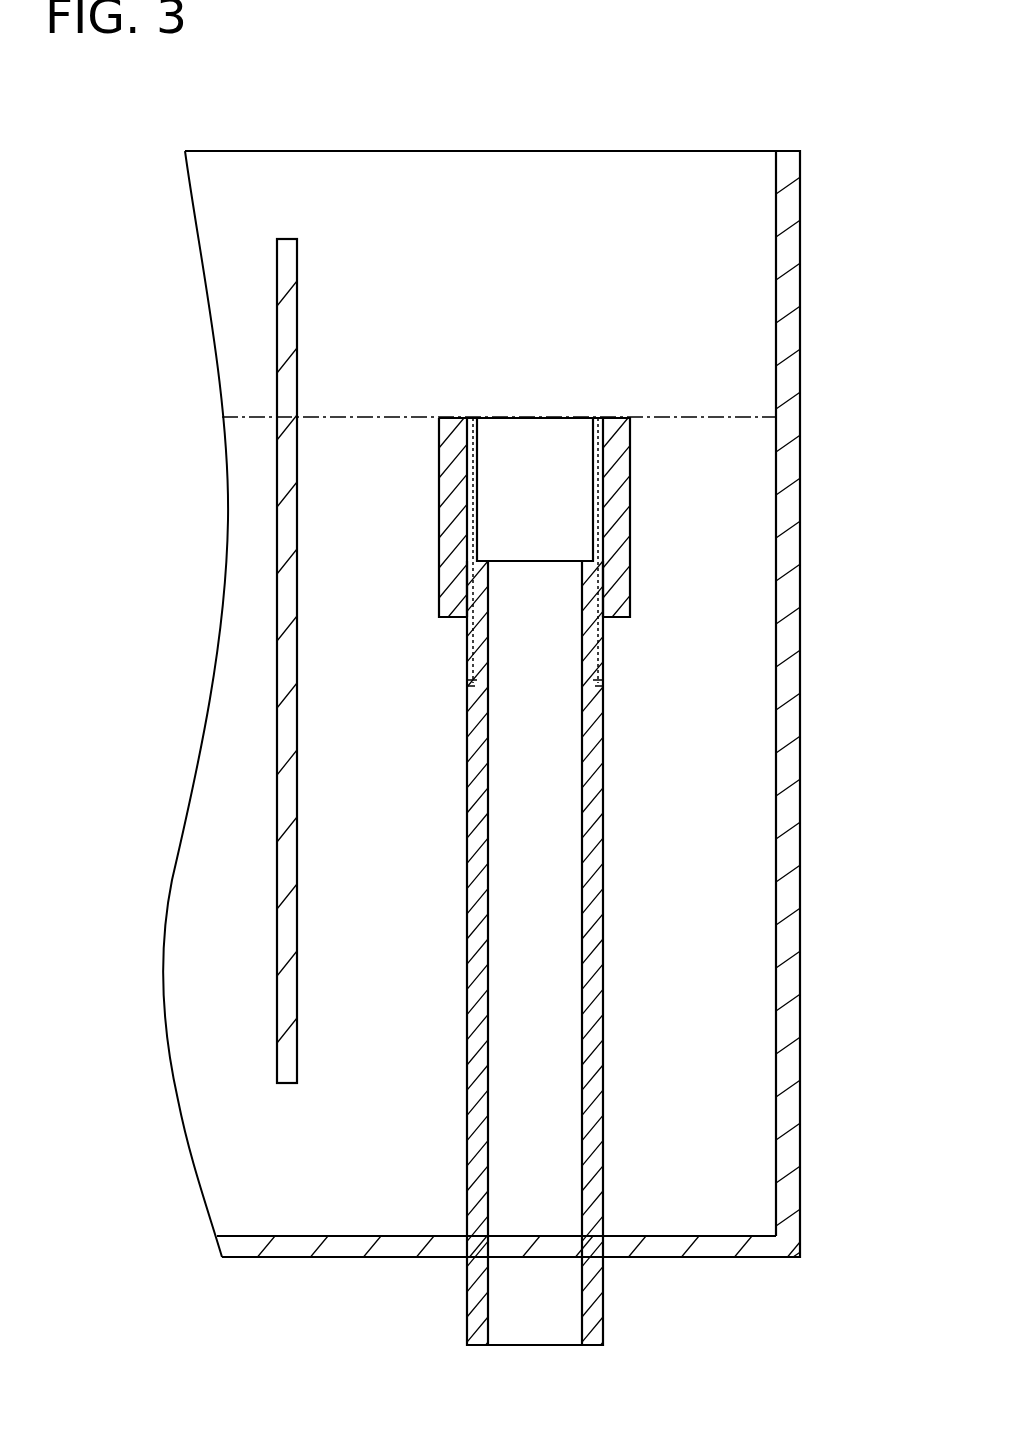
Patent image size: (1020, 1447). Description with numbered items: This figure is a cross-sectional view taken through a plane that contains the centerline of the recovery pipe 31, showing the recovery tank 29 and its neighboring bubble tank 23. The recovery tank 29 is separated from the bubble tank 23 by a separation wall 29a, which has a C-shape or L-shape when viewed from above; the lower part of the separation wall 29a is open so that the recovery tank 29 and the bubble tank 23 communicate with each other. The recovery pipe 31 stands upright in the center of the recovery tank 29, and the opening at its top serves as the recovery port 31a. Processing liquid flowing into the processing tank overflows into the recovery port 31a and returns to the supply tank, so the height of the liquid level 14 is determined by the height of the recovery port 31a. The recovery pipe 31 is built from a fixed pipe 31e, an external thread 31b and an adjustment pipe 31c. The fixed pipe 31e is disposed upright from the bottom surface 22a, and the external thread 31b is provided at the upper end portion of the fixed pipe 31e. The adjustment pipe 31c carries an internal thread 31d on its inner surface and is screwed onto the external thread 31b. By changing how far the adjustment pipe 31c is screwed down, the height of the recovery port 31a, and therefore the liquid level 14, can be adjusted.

The liquid level 14 is at (372, 415).
The bottom surface 22a is at (720, 1258).
The bubble tank 23 is at (228, 652).
The recovery tank 29 is at (772, 723).
The separation wall 29a is at (275, 255).
The recovery pipe 31 is at (720, 758).
The recovery port 31a is at (598, 418).
The external thread 31b is at (603, 657).
The adjustment pipe 31c is at (600, 447).
The internal thread 31d is at (600, 447).
The fixed pipe 31e is at (603, 790).